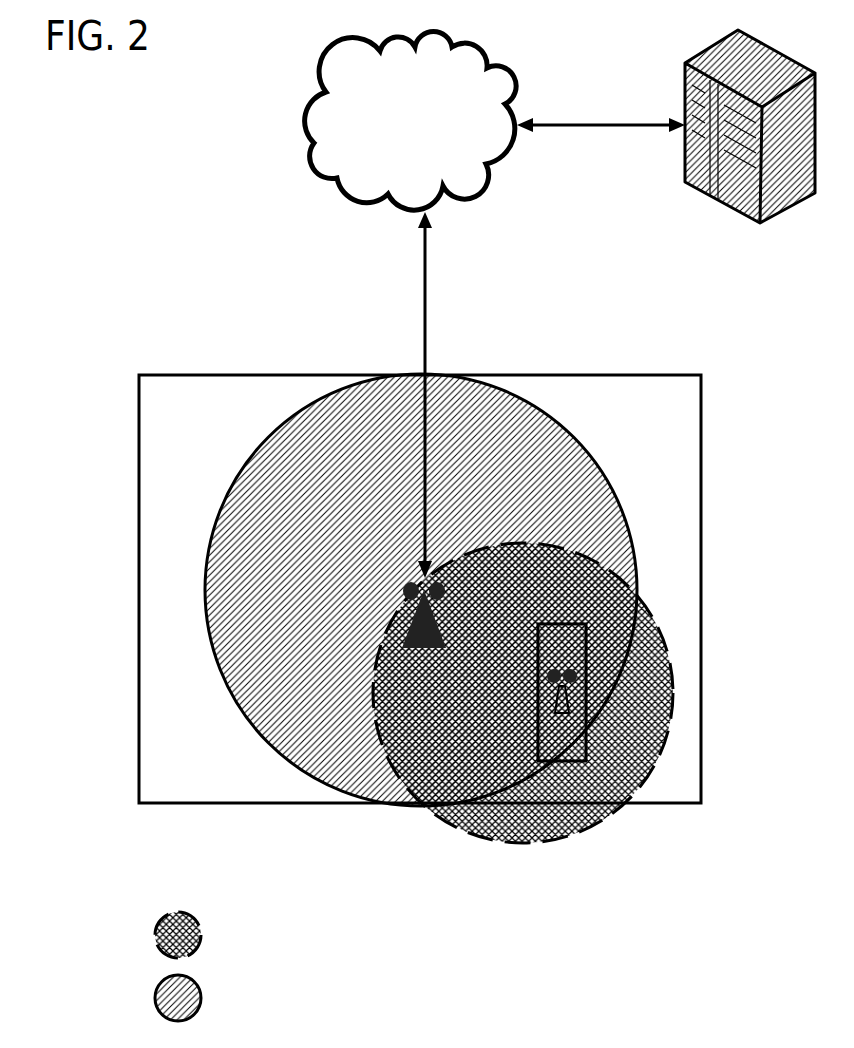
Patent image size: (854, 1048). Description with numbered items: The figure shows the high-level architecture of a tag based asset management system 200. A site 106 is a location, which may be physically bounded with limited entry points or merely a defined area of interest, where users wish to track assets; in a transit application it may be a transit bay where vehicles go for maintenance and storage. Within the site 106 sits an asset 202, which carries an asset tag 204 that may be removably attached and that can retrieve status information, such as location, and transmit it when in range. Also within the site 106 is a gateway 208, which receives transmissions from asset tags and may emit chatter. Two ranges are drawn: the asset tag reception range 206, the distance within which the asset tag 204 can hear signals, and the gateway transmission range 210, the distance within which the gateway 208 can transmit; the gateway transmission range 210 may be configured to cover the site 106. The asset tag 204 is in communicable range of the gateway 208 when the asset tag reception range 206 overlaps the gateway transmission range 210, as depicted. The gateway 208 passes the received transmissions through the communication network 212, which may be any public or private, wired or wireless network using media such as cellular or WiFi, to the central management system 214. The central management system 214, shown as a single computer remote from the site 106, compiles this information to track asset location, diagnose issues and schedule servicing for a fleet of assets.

The system 200 is at (153, 132).
The site 106 is at (552, 375).
The asset 202 is at (604, 626).
The asset tag 204 is at (577, 709).
The asset tag reception range 206 is at (548, 597).
The gateway 208 is at (523, 693).
The gateway transmission range 210 is at (574, 428).
The communication network 212 is at (505, 65).
The central management system 214 is at (742, 217).